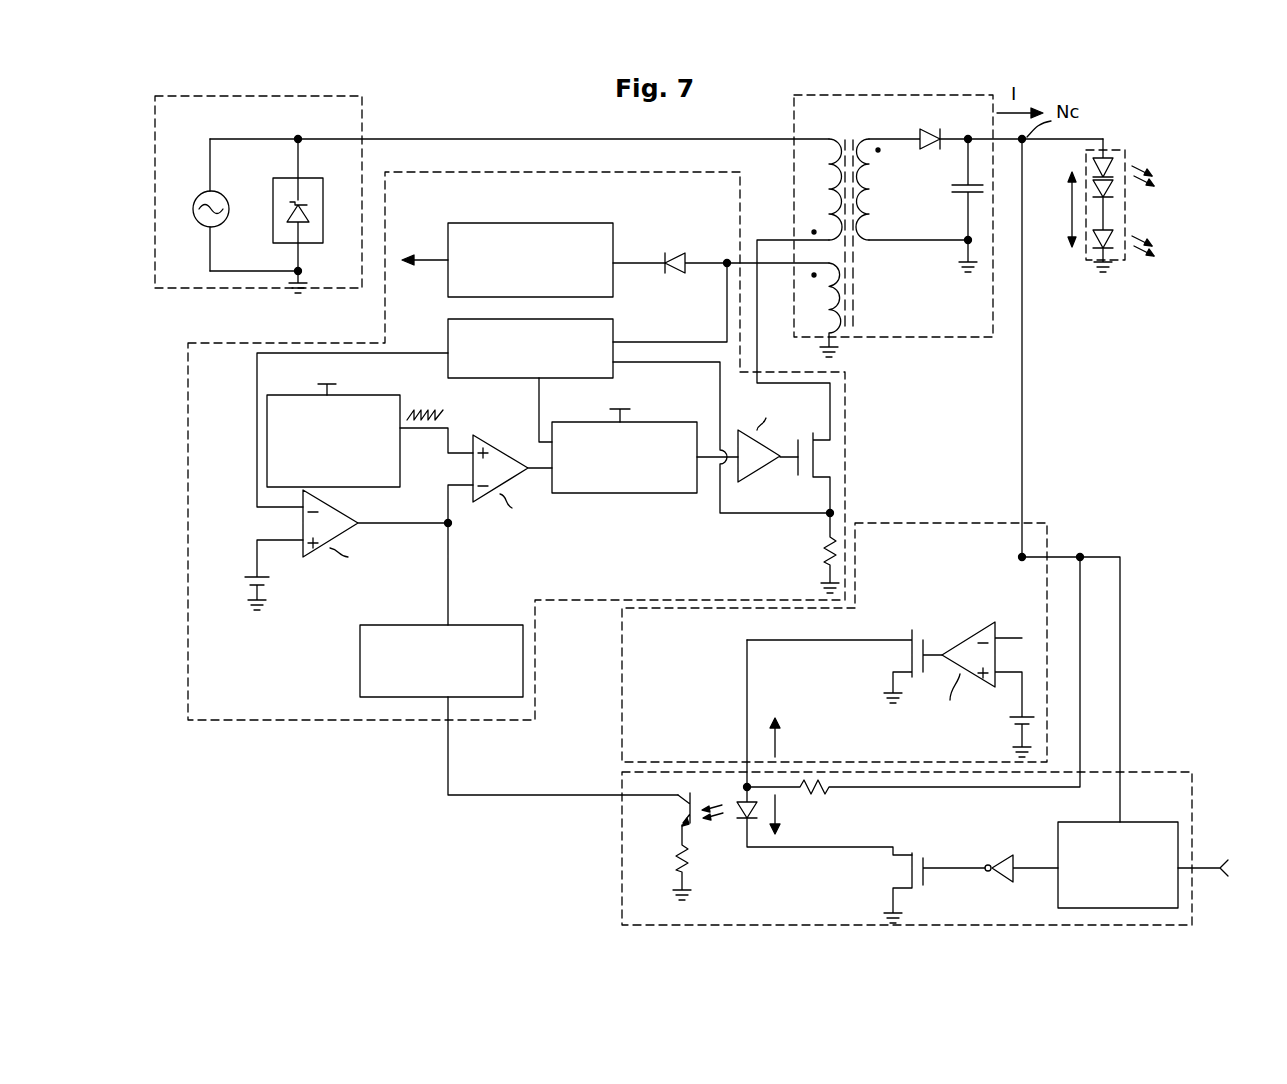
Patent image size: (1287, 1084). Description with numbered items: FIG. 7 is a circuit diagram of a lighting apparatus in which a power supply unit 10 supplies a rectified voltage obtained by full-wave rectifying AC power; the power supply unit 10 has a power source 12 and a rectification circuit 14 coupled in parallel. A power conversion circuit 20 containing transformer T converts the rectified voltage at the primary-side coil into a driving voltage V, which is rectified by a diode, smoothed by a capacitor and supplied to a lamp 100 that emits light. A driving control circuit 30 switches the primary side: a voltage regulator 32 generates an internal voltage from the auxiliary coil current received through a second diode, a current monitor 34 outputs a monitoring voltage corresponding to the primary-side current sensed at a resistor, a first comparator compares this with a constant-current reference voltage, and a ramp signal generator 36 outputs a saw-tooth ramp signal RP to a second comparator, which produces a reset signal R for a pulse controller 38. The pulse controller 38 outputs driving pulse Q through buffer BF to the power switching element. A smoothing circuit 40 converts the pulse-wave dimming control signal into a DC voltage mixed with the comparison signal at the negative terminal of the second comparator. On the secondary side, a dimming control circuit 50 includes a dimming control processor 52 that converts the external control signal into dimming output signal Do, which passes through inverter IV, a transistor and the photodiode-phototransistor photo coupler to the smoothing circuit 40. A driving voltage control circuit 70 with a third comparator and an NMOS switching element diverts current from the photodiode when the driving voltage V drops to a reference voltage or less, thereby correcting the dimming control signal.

The power supply unit 10 is at (190, 289).
The power source 12 is at (197, 196).
The rectification circuit 14 is at (273, 196).
The power conversion circuit 20 is at (913, 339).
The driving control circuit 30 is at (200, 722).
The voltage regulator 32 is at (613, 223).
The current monitor 34 is at (613, 324).
The ramp signal generator 36 is at (366, 394).
The pulse controller 38 is at (645, 438).
The smoothing circuit 40 is at (470, 625).
The dimming control circuit 50 is at (622, 900).
The dimming control processor 52 is at (1147, 821).
The driving voltage control circuit 70 is at (622, 690).
The lamp 100 is at (1126, 254).